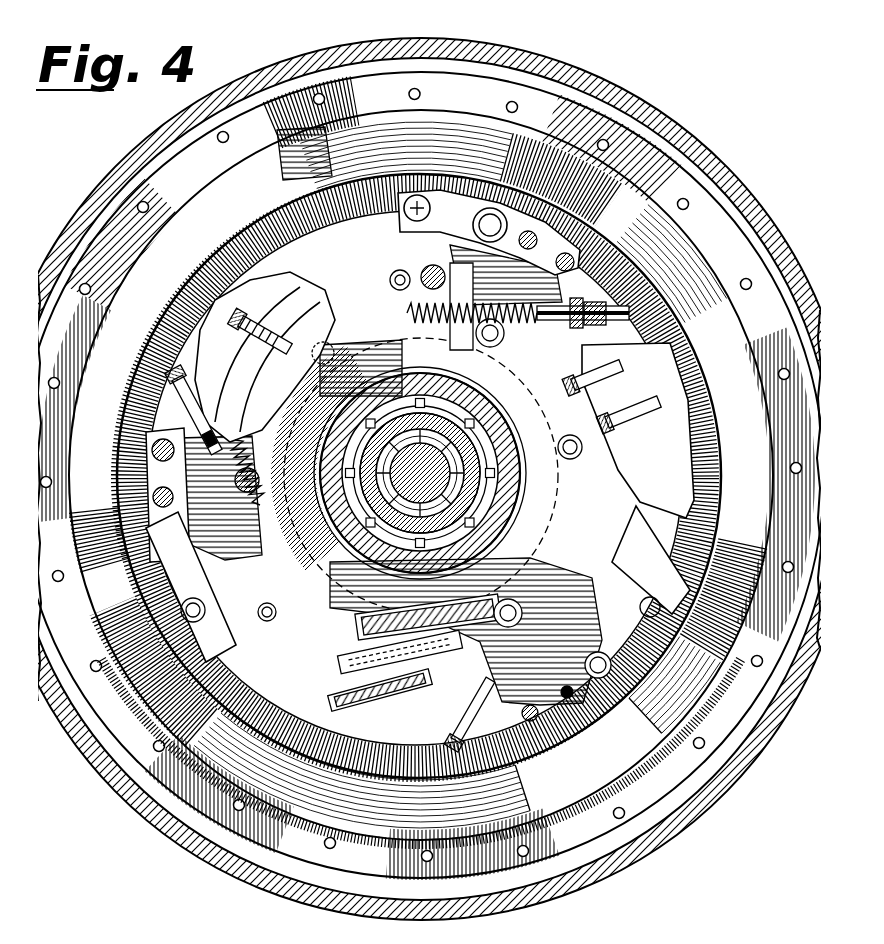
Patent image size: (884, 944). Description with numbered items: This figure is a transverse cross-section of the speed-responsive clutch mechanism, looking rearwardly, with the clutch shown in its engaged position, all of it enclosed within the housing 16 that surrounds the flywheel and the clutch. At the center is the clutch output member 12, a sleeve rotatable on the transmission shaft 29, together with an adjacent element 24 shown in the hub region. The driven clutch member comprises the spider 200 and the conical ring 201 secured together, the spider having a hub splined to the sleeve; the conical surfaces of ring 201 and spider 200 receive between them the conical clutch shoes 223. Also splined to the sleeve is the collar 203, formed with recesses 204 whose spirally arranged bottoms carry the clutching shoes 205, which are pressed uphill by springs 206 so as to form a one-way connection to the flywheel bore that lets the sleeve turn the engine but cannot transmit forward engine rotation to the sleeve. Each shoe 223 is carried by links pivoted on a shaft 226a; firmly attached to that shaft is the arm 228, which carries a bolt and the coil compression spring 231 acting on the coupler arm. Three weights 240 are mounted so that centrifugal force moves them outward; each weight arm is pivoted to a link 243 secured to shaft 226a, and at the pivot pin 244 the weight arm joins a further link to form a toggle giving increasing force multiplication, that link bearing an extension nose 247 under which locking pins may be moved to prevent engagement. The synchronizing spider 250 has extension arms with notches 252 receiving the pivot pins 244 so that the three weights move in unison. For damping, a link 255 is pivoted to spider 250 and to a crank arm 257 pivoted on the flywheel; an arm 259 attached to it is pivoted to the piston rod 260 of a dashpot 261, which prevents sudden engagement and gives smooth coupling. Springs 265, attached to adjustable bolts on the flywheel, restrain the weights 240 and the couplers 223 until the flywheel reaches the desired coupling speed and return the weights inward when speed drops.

The housing 16 is at (153, 136).
The spider 200 is at (384, 72).
The conical clutch coupler or shoe 223 is at (443, 120).
The link 243 is at (488, 190).
The shaft 226a is at (545, 190).
The pivot pin 244 is at (590, 300).
The arm 228 is at (610, 356).
The conical ring 201 is at (421, 475).
The weight 240 is at (444, 472).
The link 255 is at (400, 229).
The crank arm 257 is at (405, 305).
The arm 259 is at (272, 352).
The synchronizing spider 250 is at (187, 422).
The spring 265 is at (566, 280).
The notch 252 is at (617, 365).
The coil compression spring 231 is at (617, 433).
The clutching shoe 205 is at (540, 460).
The recess 204 is at (545, 476).
The clutch output member 12 is at (490, 455).
The bearing 24 is at (308, 530).
The spring 206 is at (523, 553).
The shaft 29 is at (401, 563).
The collar 203 is at (420, 501).
The piston rod 260 is at (247, 630).
The extension nose 247 is at (325, 666).
The dashpot 261 is at (340, 690).